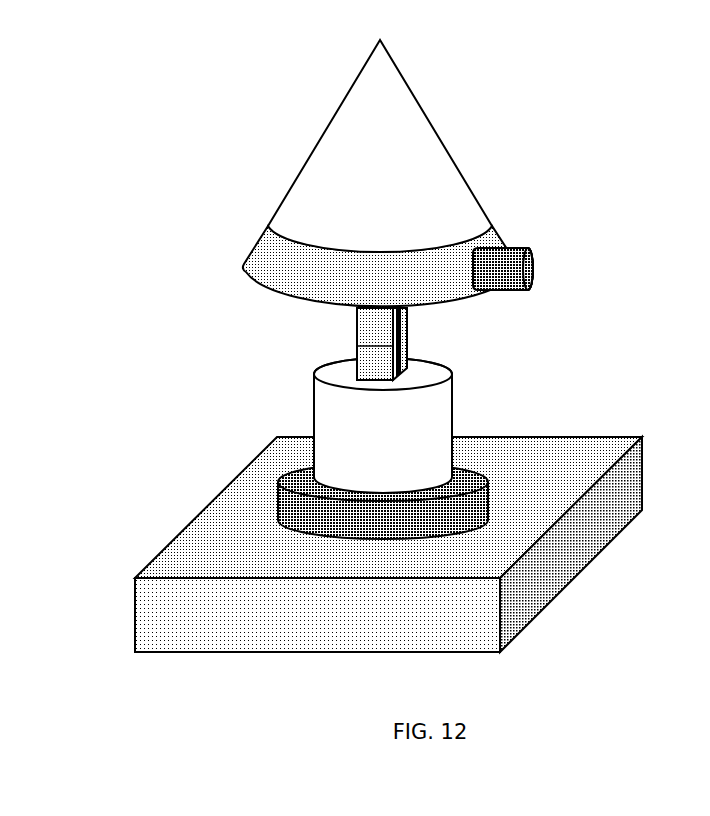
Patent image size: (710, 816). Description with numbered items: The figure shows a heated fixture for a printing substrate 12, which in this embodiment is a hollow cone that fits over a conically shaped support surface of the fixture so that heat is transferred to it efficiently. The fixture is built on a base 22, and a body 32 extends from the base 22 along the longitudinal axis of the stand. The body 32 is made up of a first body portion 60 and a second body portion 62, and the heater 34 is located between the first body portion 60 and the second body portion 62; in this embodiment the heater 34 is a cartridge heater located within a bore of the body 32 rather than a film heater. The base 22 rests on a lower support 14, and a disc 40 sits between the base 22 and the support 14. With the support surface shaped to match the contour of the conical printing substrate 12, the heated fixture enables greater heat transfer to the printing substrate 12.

The printing substrate 12 is at (403, 142).
The base 14 is at (583, 522).
The base 22 is at (415, 448).
The body 32 is at (270, 258).
The heater 34 is at (357, 346).
The disk 40 is at (492, 492).
The first body portion 60 is at (357, 318).
The second body portion 62 is at (407, 355).